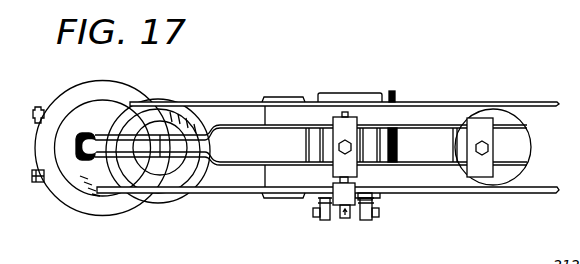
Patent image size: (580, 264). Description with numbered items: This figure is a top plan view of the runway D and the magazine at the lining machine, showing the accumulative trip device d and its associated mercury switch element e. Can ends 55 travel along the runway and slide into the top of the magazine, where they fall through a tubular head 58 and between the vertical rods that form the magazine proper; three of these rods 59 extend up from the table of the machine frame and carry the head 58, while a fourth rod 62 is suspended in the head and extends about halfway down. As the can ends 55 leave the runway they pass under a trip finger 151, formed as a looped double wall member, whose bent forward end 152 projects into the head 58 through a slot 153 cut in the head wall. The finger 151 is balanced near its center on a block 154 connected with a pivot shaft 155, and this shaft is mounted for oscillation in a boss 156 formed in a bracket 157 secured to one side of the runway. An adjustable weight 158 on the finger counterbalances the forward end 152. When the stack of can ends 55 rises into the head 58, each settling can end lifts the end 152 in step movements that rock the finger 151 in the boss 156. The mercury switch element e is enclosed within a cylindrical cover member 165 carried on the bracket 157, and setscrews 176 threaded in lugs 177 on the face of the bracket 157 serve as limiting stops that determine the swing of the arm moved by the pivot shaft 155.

The can end 55 is at (142, 165).
The tubular head 58 is at (97, 205).
The vertical rod 59 is at (42, 106).
The fourth rod 62 is at (40, 185).
The trip finger 151 is at (237, 127).
The bent forward end 152 is at (160, 112).
The slot 153 is at (107, 157).
The block 154 is at (352, 122).
The pivot shaft 155 is at (344, 112).
The boss 156 is at (342, 222).
The bracket 157 is at (375, 197).
The adjustable weight 158 is at (480, 120).
The cylindrical cover member 165 is at (398, 93).
The setscrew 176 is at (317, 217).
The lug 177 is at (323, 227).
The accumulative trip device d is at (206, 127).
The mercury switch element e is at (393, 95).
The runway D is at (522, 194).